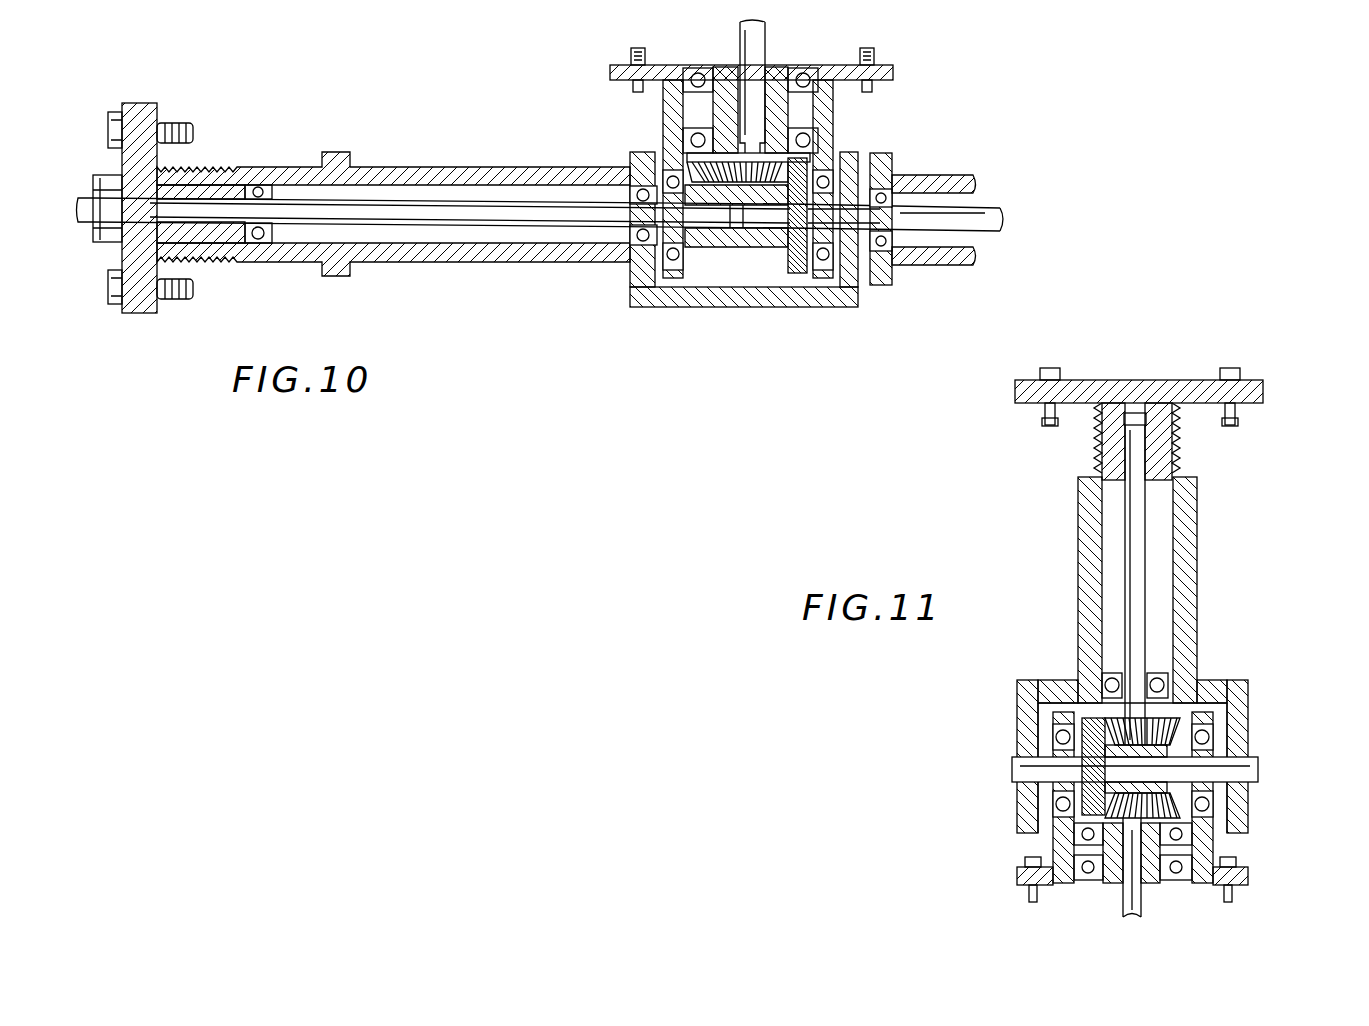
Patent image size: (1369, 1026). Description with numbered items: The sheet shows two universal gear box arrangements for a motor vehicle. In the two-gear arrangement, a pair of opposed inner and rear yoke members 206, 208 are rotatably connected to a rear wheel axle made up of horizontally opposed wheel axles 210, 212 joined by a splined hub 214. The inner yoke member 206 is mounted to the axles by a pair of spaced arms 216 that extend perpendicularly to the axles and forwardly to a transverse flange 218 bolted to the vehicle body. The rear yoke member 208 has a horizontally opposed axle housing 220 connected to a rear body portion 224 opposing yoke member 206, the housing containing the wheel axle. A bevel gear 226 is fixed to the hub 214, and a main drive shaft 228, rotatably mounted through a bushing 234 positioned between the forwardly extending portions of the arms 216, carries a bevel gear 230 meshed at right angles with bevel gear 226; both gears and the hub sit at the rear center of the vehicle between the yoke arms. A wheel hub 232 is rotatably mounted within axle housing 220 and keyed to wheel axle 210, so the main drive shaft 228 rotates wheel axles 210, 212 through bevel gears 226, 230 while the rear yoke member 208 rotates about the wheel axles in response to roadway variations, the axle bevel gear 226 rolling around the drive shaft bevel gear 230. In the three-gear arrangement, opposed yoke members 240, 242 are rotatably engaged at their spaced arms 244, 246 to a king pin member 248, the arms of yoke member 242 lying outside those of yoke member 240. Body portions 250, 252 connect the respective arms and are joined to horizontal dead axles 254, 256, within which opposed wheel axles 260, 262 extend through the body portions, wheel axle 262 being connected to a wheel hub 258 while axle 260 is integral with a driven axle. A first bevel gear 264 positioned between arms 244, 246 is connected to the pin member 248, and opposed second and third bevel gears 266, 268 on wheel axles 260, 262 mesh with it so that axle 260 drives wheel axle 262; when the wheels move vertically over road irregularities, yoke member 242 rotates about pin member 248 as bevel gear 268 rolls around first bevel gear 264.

In FIG. 10, the inner yoke member 206 is at (622, 99).
In FIG. 10, the rear yoke member 208 is at (697, 314).
In FIG. 10, the wheel axle 210 is at (465, 205).
In FIG. 10, the wheel axle 212 is at (935, 224).
In FIG. 10, the splined hub 214 is at (748, 250).
In FIG. 10, the spaced arms 216 is at (665, 118).
In FIG. 10, the transverse flange 218 is at (893, 80).
In FIG. 10, the axle housing 220 is at (443, 255).
In FIG. 10, the rear body portion 224 is at (982, 262).
In FIG. 10, the bevel gear 226 is at (795, 272).
In FIG. 10, the main drive shaft 228 is at (767, 40).
In FIG. 10, the bevel gear 230 is at (672, 160).
In FIG. 10, the wheel hub 232 is at (122, 257).
In FIG. 10, the housing bottom plate 234 is at (745, 307).
In FIG. 11, the yoke member 240 is at (1262, 893).
In FIG. 11, the yoke member 242 is at (1258, 700).
In FIG. 11, the spaced arms 244 is at (1058, 812).
In FIG. 11, the spaced arms 246 is at (1027, 695).
In FIG. 11, the king pin member 248 is at (1237, 767).
In FIG. 11, the body portion 250 is at (1205, 885).
In FIG. 11, the body portion 252 is at (1207, 690).
In FIG. 11, the horizontal dead axle 254 is at (1058, 880).
In FIG. 11, the horizontal dead axle 256 is at (1090, 560).
In FIG. 11, the wheel hub 258 is at (1250, 405).
In FIG. 11, the wheel axle 260 is at (1132, 898).
In FIG. 11, the wheel axle 262 is at (1140, 530).
In FIG. 11, the first bevel gear 264 is at (1057, 718).
In FIG. 11, the second bevel gear 266 is at (1190, 815).
In FIG. 11, the third bevel gear 268 is at (1050, 677).